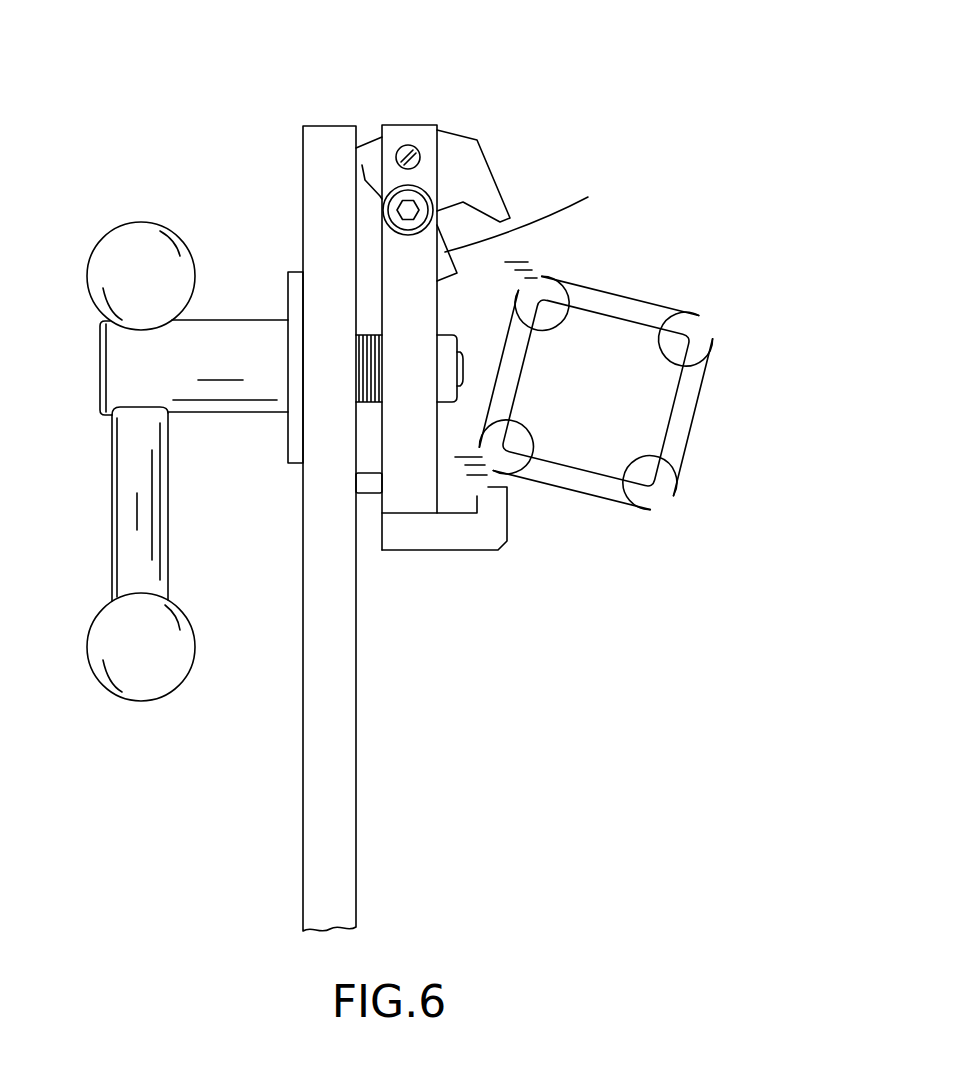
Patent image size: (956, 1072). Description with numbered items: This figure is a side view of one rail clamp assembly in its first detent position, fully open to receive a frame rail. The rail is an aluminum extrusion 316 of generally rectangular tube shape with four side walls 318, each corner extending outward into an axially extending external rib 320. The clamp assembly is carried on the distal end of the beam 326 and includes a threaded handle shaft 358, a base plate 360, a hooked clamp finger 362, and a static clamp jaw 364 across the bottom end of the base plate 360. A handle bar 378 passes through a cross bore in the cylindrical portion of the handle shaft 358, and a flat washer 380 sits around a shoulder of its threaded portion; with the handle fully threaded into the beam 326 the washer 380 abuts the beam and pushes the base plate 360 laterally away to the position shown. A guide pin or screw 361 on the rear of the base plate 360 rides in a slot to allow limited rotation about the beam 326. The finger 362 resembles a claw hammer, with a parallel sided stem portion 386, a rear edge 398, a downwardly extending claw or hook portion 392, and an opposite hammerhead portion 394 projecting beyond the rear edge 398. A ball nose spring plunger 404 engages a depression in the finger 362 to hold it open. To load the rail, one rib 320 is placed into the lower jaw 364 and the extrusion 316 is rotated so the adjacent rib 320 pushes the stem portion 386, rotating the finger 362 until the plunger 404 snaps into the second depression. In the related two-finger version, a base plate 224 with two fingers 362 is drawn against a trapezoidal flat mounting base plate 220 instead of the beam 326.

The aluminum extrusion 316 is at (620, 381).
The side walls 318 is at (527, 343).
The external rib 320 is at (533, 237).
The beam 326 is at (318, 489).
The trapezoidal flat mounting base plate 220 is at (310, 125).
The threaded handle shaft 358 is at (223, 415).
The base plate 360 is at (442, 565).
The base plate 224 is at (442, 565).
The guide pin or screw 361 is at (365, 497).
The hooked clamp finger 362 is at (429, 304).
The static clamp jaw 364 is at (472, 552).
The handle bar 378 is at (150, 222).
The flat washer 380 is at (288, 276).
The parallel sided stem portion 386 is at (532, 210).
The claw or hook portion 392 is at (497, 175).
The hammerhead portion 394 is at (360, 168).
The rear edge 398 is at (367, 193).
The ball nose spring plunger 404 is at (408, 145).